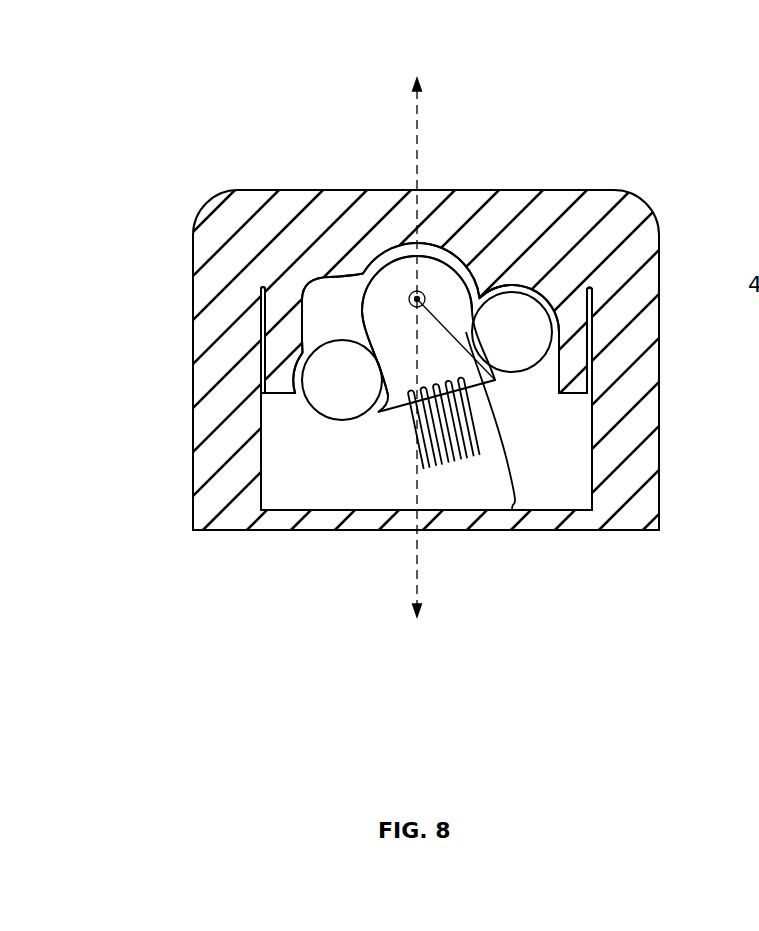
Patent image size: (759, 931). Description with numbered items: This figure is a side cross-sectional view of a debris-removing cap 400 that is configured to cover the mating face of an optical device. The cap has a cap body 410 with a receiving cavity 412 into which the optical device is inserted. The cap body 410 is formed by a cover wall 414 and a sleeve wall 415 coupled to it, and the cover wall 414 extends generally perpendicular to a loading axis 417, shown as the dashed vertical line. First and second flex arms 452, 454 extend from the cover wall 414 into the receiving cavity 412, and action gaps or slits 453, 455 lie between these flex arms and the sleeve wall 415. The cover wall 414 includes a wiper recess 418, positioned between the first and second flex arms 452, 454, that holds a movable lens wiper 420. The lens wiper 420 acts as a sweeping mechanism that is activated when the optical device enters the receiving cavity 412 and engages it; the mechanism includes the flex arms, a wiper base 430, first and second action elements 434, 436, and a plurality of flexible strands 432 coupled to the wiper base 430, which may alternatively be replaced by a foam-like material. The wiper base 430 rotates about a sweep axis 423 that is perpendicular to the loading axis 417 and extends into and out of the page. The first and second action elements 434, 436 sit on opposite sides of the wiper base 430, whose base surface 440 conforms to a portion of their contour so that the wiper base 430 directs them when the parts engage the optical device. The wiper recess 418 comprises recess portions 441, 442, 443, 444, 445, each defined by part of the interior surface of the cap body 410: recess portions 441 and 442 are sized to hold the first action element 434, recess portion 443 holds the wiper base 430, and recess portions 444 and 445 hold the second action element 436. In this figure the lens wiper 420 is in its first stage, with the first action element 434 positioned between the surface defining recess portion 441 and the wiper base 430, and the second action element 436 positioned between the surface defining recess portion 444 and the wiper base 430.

The debris-removing cap 400 is at (379, 347).
The cap body 410 is at (660, 283).
The receiving cavity 412 is at (333, 502).
The cover wall 414 is at (312, 220).
The sleeve wall 415 is at (194, 418).
The loading axis 417 is at (423, 92).
The wiper recess 418 is at (383, 255).
The lens wiper 420 is at (457, 263).
The sweep axis 423 is at (510, 374).
The wiper base 430 is at (363, 303).
The flexible strands 432 is at (470, 470).
The first action element 434 is at (338, 422).
The second action element 436 is at (547, 383).
The base surface 440 is at (361, 320).
The recess portion 441 is at (298, 402).
The recess portion 442 is at (320, 302).
The recess portion 443 is at (478, 291).
The recess portion 444 is at (553, 297).
The recess portion 445 is at (594, 470).
The first flex arm 452 is at (276, 308).
The action slit 453 is at (260, 396).
The second flex arm 454 is at (578, 348).
The action slit 455 is at (597, 378).